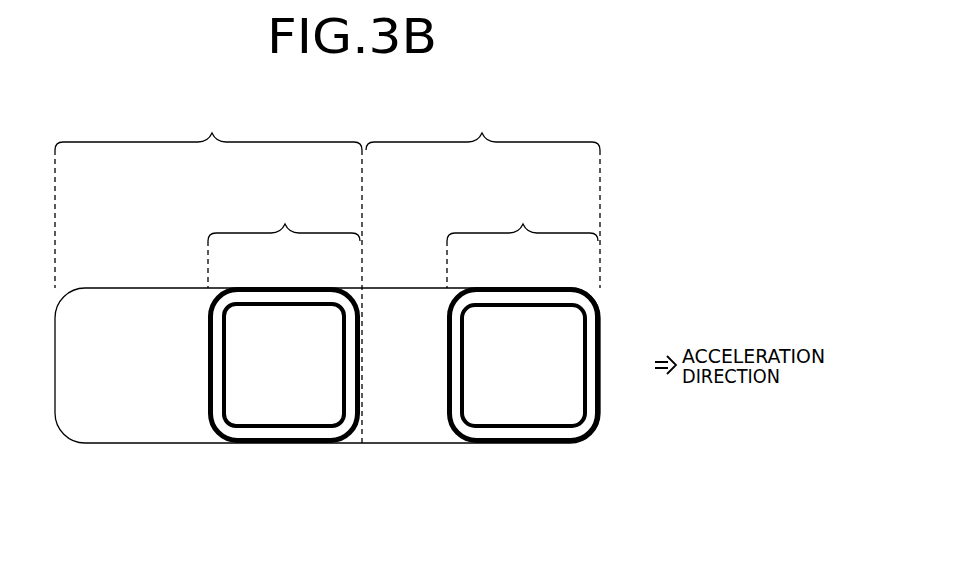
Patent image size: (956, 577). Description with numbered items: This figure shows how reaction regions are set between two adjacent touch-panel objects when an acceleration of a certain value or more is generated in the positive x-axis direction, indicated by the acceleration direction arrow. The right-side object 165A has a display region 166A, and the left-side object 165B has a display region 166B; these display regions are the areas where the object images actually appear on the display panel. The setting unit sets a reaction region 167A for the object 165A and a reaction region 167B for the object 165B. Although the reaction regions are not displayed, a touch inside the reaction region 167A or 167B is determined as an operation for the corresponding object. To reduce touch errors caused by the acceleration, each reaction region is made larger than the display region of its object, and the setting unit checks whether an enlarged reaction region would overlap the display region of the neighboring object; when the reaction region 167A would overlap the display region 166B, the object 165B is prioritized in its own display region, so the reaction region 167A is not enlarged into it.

The object 165A is at (518, 442).
The object 165B is at (273, 443).
The display region 166A is at (493, 242).
The display region 166B is at (255, 242).
The reaction region 167A is at (483, 196).
The reaction region 167B is at (208, 273).